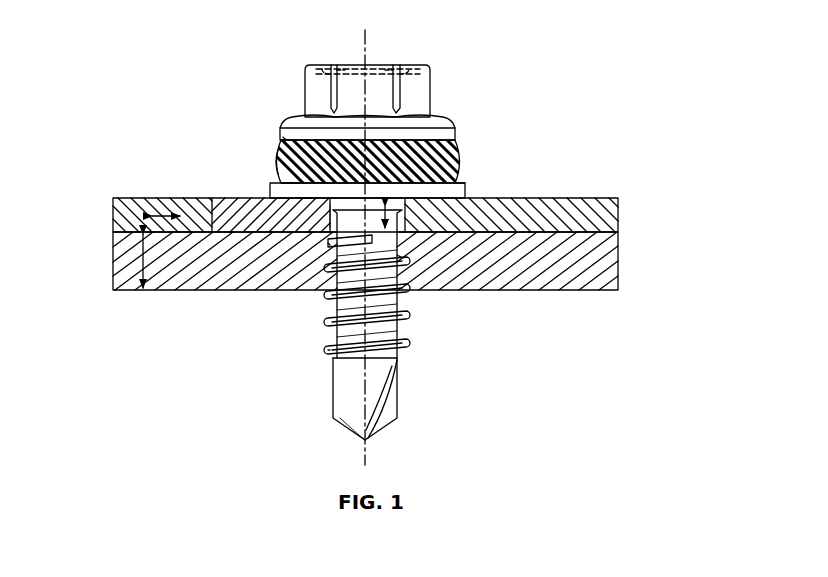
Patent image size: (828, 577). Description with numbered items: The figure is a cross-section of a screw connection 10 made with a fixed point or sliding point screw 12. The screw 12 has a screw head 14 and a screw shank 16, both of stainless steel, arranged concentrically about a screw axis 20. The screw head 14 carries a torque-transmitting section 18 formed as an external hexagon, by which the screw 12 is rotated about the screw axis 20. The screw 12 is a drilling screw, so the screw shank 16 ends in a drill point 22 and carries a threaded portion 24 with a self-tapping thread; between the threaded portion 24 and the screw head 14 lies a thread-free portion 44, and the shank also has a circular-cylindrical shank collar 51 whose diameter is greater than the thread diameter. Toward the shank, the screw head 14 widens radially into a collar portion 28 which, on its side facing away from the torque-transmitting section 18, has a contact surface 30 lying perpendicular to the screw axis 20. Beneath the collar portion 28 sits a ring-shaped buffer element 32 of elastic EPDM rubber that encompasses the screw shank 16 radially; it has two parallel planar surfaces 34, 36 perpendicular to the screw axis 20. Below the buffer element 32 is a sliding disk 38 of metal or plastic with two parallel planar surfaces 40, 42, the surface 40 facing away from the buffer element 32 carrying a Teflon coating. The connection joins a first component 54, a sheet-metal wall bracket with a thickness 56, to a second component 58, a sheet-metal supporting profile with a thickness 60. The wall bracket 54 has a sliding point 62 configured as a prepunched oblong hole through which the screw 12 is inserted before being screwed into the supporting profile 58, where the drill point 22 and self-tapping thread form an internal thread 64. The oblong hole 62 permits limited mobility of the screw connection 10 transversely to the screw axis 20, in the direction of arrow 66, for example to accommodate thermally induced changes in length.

The screw connection 10 is at (515, 68).
The fixed point or sliding point screw 12 is at (284, 103).
The screw head 14 is at (420, 88).
The screw shank 16 is at (360, 294).
The torque-transmitting section 18 is at (334, 90).
The screw axis 20 is at (367, 50).
The drill point 22 is at (396, 411).
The threaded portion 24 is at (334, 326).
The collar portion 28 is at (455, 133).
The contact surface 30 is at (455, 157).
The buffer element 32 is at (276, 158).
The planar surface 34 is at (288, 186).
The planar surface 36 is at (282, 140).
The sliding disk 38 is at (456, 193).
The planar surface 40 is at (305, 199).
The planar surface 42 is at (459, 181).
The thread-free portion 44 is at (388, 216).
The shank collar 51 is at (330, 240).
The first component 54 is at (396, 248).
The thickness 56 is at (212, 224).
The second component 58 is at (340, 294).
The thickness 60 is at (142, 263).
The sliding point 62 is at (346, 204).
The internal thread 64 is at (403, 259).
The arrow 66 is at (178, 212).